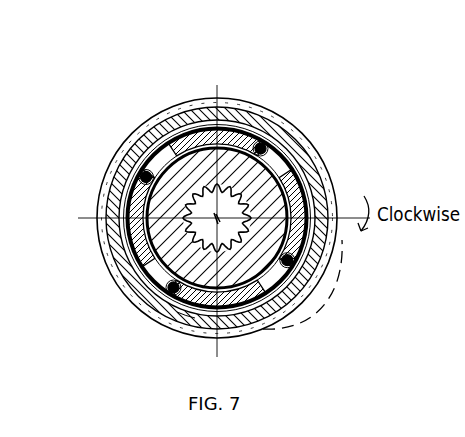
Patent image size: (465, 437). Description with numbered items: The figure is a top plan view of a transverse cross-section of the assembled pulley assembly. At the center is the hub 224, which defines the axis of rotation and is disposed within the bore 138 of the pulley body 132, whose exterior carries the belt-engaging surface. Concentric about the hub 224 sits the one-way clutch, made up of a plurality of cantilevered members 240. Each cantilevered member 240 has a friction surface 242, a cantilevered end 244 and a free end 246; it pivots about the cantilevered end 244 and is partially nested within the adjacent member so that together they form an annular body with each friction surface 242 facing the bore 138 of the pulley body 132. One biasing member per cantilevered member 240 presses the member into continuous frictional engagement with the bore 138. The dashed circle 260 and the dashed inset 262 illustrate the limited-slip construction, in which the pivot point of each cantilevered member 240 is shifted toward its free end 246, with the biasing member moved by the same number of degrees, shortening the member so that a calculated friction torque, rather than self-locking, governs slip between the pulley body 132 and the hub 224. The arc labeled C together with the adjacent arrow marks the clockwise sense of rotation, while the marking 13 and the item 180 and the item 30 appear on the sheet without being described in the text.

The pulley body 132 is at (311, 160).
The cantilevered members 240 is at (165, 123).
The friction surface 242 is at (232, 120).
The dashed circle 260 is at (223, 128).
The free end 246 is at (315, 187).
The dashed inset 262 is at (147, 160).
The hub 180 is at (290, 207).
The hub 224 is at (207, 200).
The shaft 30 is at (201, 231).
The bore 138 is at (135, 297).
The cantilevered end 244 is at (177, 312).
The clockwise rotation direction C is at (338, 297).
The drive assembly 13 is at (444, 312).